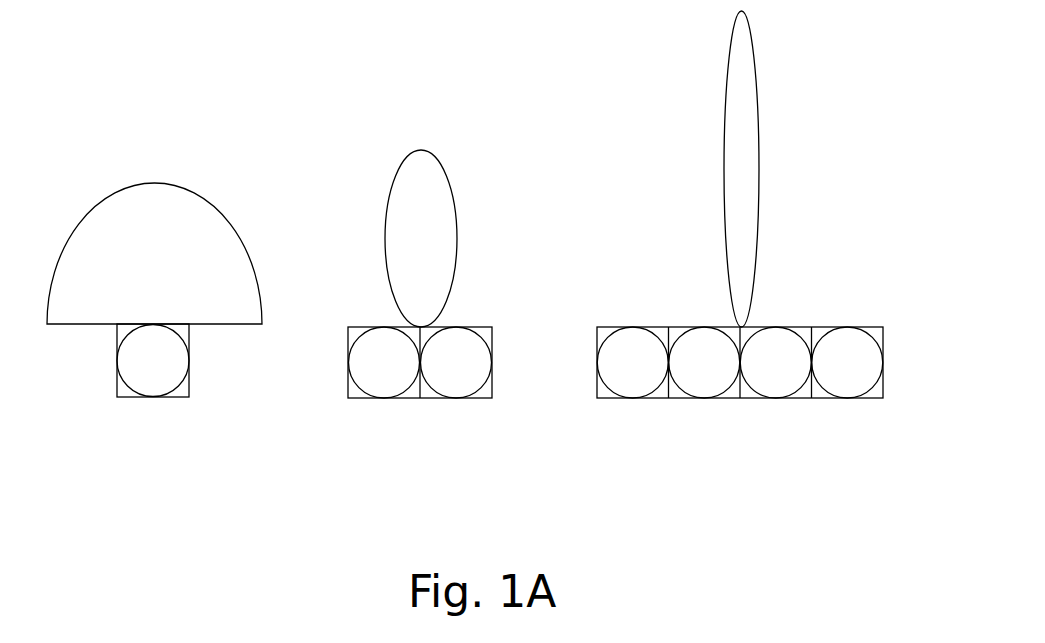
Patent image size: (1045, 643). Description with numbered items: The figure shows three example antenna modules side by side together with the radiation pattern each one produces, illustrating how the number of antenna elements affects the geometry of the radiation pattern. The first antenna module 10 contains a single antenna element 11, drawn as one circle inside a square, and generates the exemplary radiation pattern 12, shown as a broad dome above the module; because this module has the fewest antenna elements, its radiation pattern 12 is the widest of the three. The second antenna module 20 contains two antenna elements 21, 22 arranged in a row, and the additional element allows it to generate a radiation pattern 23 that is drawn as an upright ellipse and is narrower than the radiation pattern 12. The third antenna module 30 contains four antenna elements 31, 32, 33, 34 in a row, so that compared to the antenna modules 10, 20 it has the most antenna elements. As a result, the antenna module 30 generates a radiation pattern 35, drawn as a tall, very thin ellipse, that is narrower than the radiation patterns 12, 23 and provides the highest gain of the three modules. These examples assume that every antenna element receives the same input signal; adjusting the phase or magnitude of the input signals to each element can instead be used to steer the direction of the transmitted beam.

The antenna module 10 is at (178, 398).
The antenna element 11 is at (153, 362).
The radiation pattern 12 is at (215, 207).
The antenna module 20 is at (477, 398).
The antenna element 21 is at (385, 363).
The antenna element 22 is at (458, 368).
The radiation pattern 23 is at (445, 172).
The antenna module 30 is at (871, 398).
The antenna element 31 is at (632, 366).
The antenna element 32 is at (708, 367).
The antenna element 33 is at (779, 367).
The antenna element 34 is at (850, 367).
The radiation pattern 35 is at (756, 69).